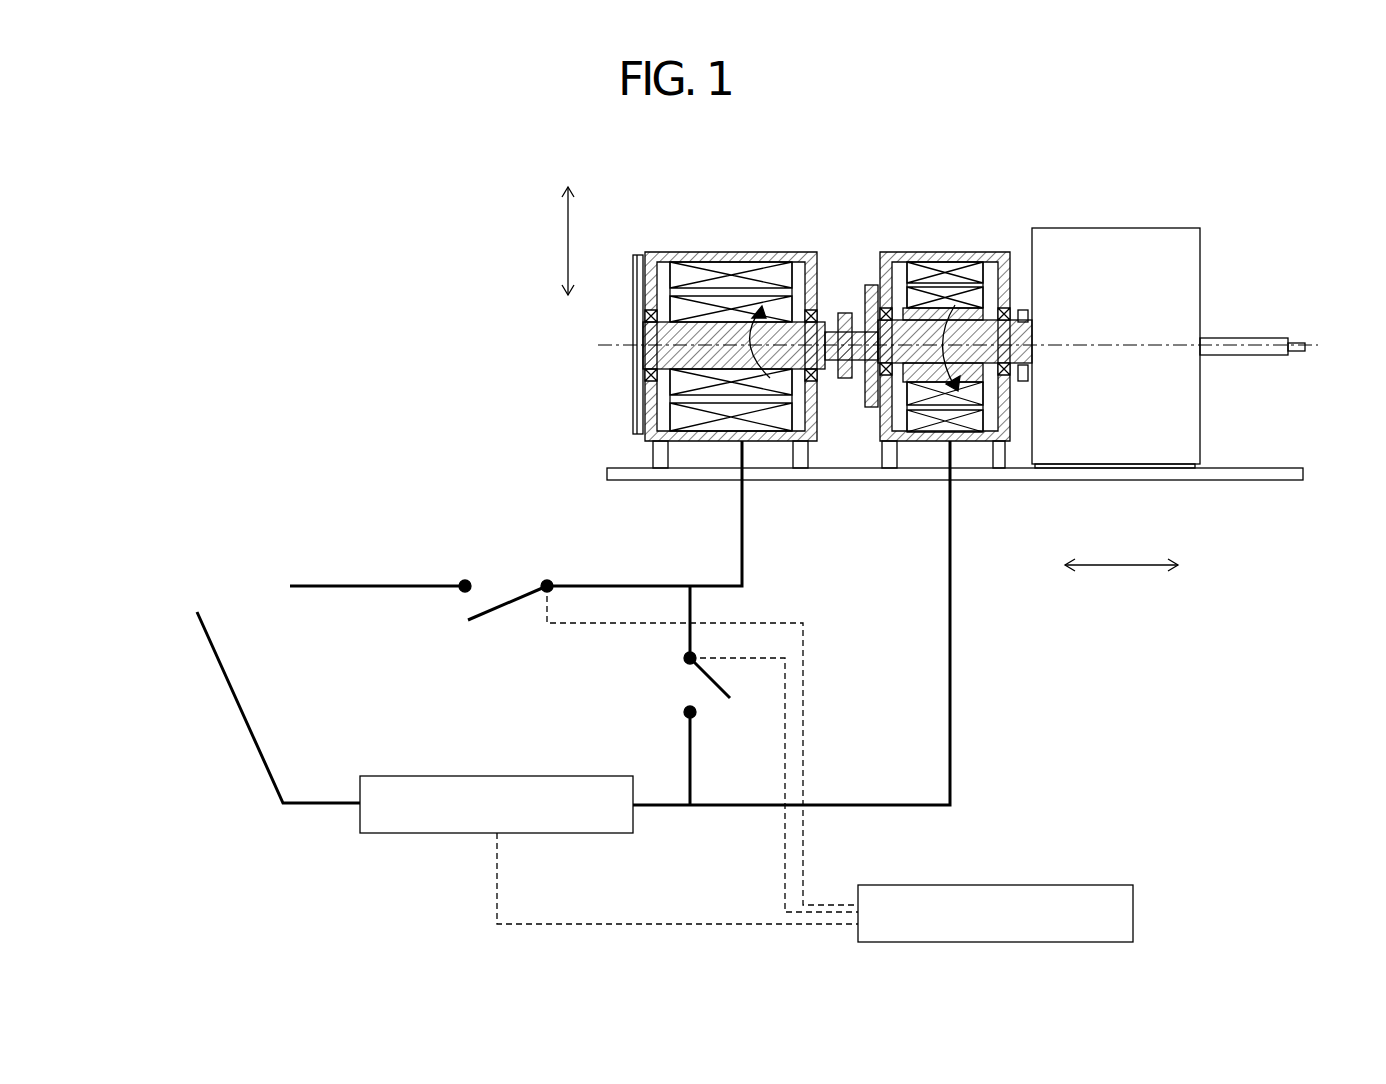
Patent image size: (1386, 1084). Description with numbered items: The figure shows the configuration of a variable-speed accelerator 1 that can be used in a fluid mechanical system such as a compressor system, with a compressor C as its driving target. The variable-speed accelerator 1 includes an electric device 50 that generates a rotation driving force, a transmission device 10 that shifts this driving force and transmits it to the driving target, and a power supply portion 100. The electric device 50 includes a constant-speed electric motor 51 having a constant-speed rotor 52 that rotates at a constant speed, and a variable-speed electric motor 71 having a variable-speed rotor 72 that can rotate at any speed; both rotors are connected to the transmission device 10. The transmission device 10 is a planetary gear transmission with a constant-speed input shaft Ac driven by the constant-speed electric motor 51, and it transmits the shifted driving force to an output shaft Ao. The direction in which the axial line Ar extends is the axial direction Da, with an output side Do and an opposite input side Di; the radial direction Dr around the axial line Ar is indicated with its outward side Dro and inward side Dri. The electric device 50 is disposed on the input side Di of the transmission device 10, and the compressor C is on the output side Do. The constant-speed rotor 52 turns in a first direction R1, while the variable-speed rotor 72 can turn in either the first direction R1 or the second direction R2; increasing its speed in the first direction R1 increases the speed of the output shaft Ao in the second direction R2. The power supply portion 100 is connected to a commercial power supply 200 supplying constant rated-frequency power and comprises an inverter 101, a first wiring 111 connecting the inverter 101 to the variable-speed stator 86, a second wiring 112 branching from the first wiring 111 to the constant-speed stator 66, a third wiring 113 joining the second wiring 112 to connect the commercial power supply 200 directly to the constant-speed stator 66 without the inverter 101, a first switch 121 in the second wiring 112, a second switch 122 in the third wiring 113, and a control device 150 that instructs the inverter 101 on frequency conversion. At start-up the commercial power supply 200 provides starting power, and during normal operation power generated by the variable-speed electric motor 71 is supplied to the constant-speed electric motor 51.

The variable-speed accelerator 1 is at (1062, 182).
The transmission device 10 is at (1163, 217).
The electric device 50 is at (813, 313).
The constant-speed electric motor 51 is at (700, 240).
The constant-speed rotor 52 is at (753, 290).
The variable-speed electric motor 71 is at (908, 238).
The variable-speed rotor 72 is at (949, 280).
The first direction R1 is at (740, 356).
The second direction R2 is at (940, 385).
The constant-speed stator 66 is at (772, 422).
The variable-speed stator 86 is at (972, 425).
The constant-speed input shaft Ac is at (1017, 353).
The output shaft Ao is at (1220, 352).
The compressor C is at (1292, 338).
The axial line Ar is at (1310, 337).
The radial direction Dr is at (555, 241).
The radially outward direction Dro is at (566, 171).
The radially inward direction Dri is at (565, 320).
The axial direction Da is at (1121, 553).
The input side Di is at (1048, 565).
The output side Do is at (1196, 565).
The power supply portion 100 is at (668, 682).
The inverter 101 is at (433, 775).
The first wiring 111 is at (953, 765).
The second wiring 112 is at (692, 747).
The third wiring 113 is at (365, 585).
The first switch 121 is at (712, 677).
The second switch 122 is at (483, 613).
The control device 150 is at (1133, 913).
The commercial power supply 200 is at (202, 563).